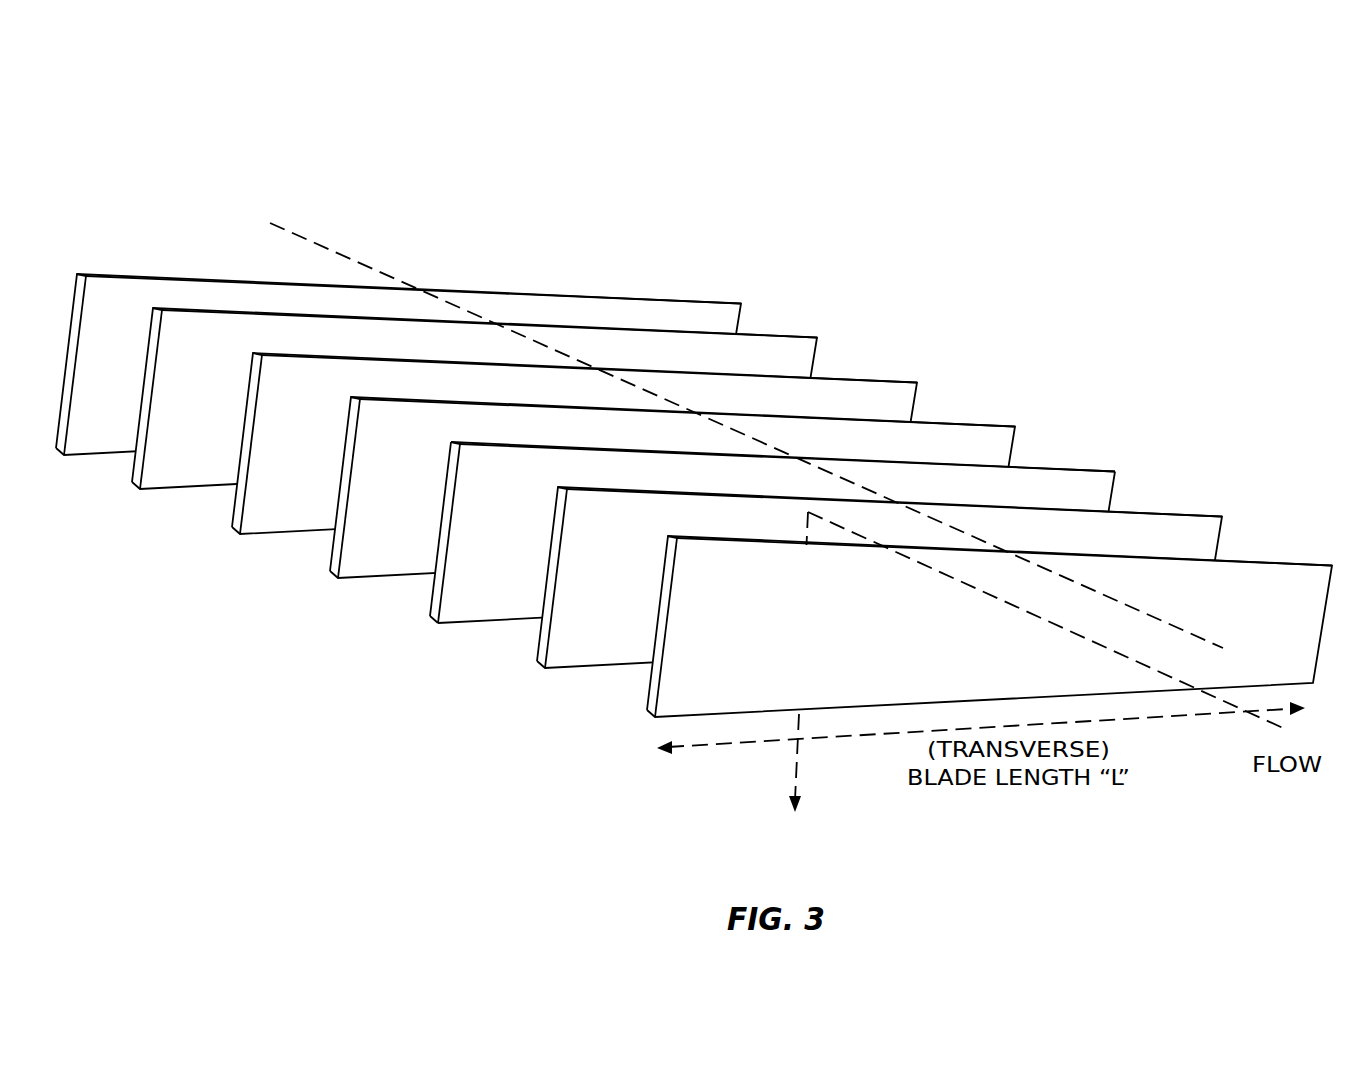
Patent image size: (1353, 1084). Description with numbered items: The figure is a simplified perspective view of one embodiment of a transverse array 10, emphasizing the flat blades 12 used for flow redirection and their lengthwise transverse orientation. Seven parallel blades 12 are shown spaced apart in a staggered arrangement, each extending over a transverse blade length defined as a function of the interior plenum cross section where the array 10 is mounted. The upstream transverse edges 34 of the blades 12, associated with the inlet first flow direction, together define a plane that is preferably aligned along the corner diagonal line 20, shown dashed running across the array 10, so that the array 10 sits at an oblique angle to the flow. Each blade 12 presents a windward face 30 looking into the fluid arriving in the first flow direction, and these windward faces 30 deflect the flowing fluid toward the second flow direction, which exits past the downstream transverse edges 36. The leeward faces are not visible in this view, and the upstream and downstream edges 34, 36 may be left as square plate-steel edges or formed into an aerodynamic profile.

The array 10 is at (694, 453).
The blade 12 is at (192, 447).
The corner diagonal line 20 is at (305, 238).
The windward face 30 is at (597, 615).
The upstream edge 34 is at (1090, 470).
The downstream edge 36 is at (492, 620).